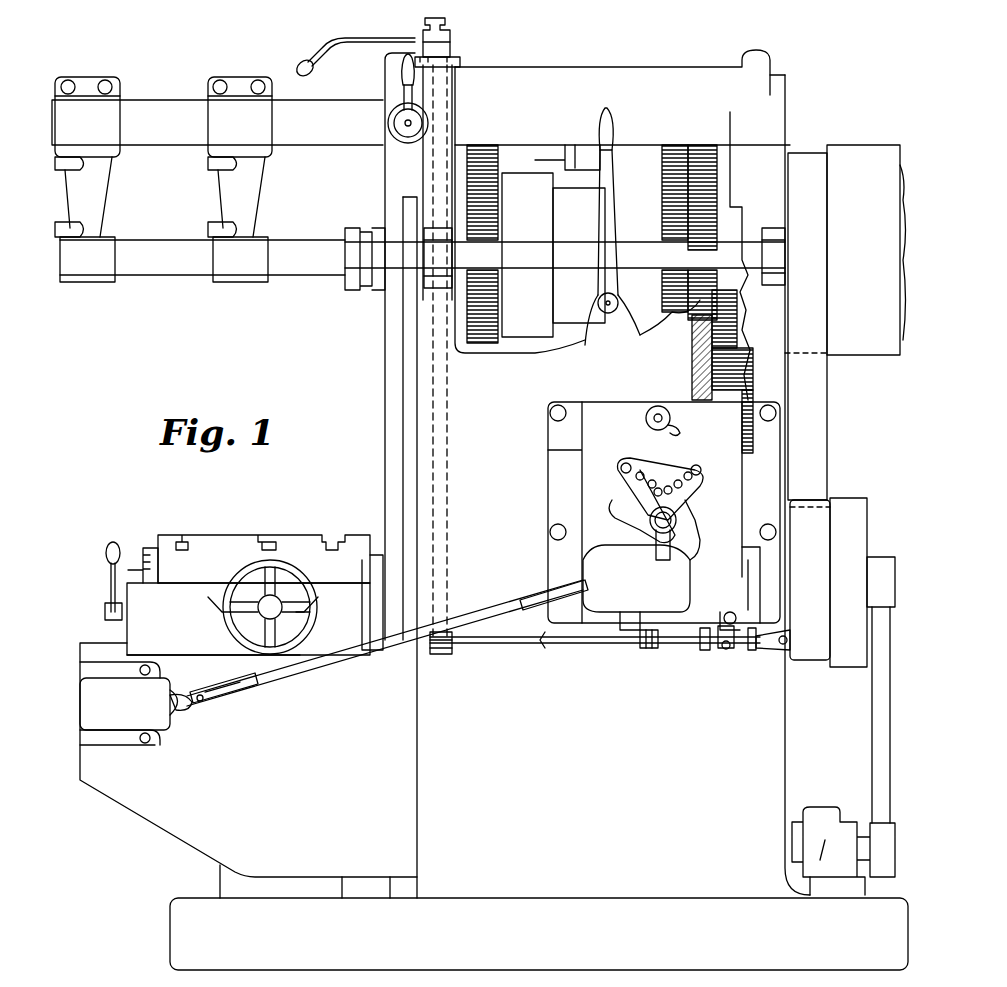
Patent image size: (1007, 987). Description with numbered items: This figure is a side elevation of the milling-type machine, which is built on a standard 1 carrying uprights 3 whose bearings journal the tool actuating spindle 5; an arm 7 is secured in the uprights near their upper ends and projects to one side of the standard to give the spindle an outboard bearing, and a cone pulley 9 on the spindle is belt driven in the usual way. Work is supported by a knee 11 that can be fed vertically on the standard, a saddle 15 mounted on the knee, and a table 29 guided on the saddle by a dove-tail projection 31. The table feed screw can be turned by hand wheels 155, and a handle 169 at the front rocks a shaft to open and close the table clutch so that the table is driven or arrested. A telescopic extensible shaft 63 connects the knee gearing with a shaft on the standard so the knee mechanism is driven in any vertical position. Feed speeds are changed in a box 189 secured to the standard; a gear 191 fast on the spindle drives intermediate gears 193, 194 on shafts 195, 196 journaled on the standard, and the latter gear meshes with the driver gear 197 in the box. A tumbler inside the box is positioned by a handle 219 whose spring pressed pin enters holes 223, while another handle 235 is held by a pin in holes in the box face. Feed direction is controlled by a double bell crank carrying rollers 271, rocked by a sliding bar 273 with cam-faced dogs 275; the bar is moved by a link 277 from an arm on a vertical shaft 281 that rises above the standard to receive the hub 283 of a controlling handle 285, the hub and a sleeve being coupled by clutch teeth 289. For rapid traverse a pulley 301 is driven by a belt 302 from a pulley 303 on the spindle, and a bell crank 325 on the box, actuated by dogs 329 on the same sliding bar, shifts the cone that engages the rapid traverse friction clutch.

The standard 1 is at (778, 735).
The uprights 3 is at (384, 153).
The tool actuating spindle 5 is at (165, 240).
The arm 7 is at (182, 100).
The cone pulley 9 is at (528, 328).
The knee 11 is at (165, 822).
The saddle 15 is at (127, 592).
The table 29 is at (160, 545).
The dove-tail projection 31 is at (218, 602).
The telescopic extensible shaft 63 is at (335, 660).
The hand wheels 155 is at (225, 624).
The handle 169 is at (107, 557).
The box 189 is at (560, 450).
The gear 191 is at (705, 292).
The intermediate gear 193 is at (700, 307).
The shaft 195 is at (718, 326).
The intermediate gear 194 is at (745, 349).
The shaft 196 is at (762, 372).
The driver gear 197 is at (756, 394).
The handle 219 is at (676, 522).
The holes 223 is at (680, 478).
The handle 235 is at (682, 432).
The rollers 271 is at (688, 506).
The sliding bar 273 is at (658, 645).
The dogs 275 is at (706, 648).
The link 277 is at (595, 651).
The vertical shaft 281 is at (448, 497).
The hub 283 is at (448, 40).
The controlling handle 285 is at (328, 50).
The clutch teeth 289 is at (450, 63).
The pulley 301 is at (790, 510).
The belt 302 is at (822, 152).
The pulley 303 is at (798, 153).
The bell crank 325 is at (776, 652).
The dogs 329 is at (730, 650).